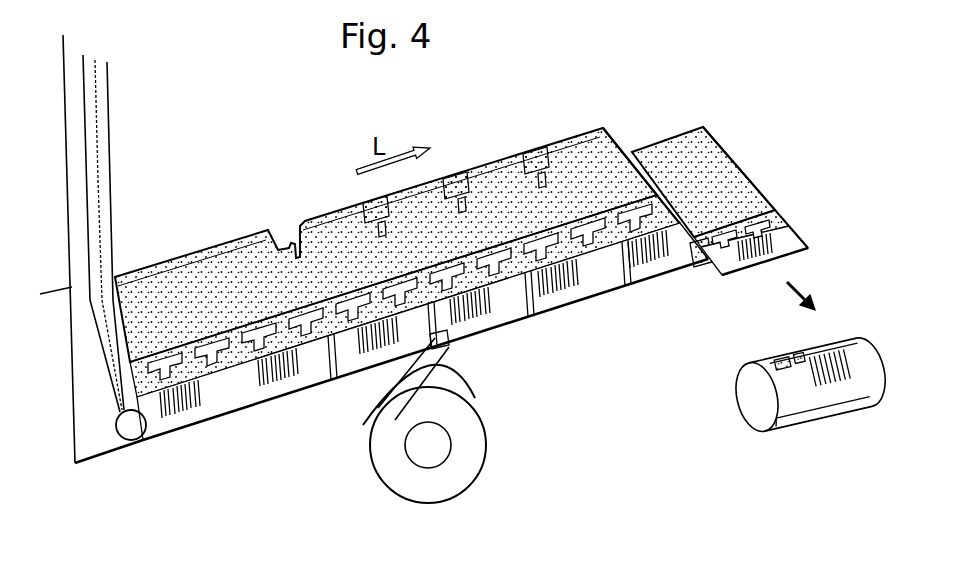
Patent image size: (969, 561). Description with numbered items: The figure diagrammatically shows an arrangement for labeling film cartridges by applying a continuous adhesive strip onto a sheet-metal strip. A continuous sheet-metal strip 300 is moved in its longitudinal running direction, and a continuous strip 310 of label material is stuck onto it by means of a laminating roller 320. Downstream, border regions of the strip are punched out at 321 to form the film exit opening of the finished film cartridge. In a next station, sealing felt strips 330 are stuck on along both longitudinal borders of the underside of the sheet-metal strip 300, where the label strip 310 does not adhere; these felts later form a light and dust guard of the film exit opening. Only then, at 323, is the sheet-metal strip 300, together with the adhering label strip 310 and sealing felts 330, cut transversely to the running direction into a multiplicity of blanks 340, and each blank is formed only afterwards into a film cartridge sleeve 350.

The sheet-metal strip 300 is at (95, 440).
The continuous strip of label material 310 is at (110, 148).
The laminating roller 320 is at (143, 425).
The punching station 321 is at (341, 367).
The cutting station 323 is at (710, 265).
The sealing felt strips 330 is at (372, 193).
The blanks 340 is at (740, 177).
The film cartridge sleeve 350 is at (755, 405).